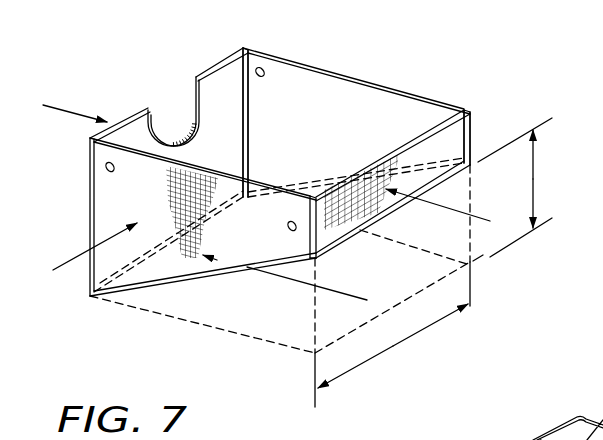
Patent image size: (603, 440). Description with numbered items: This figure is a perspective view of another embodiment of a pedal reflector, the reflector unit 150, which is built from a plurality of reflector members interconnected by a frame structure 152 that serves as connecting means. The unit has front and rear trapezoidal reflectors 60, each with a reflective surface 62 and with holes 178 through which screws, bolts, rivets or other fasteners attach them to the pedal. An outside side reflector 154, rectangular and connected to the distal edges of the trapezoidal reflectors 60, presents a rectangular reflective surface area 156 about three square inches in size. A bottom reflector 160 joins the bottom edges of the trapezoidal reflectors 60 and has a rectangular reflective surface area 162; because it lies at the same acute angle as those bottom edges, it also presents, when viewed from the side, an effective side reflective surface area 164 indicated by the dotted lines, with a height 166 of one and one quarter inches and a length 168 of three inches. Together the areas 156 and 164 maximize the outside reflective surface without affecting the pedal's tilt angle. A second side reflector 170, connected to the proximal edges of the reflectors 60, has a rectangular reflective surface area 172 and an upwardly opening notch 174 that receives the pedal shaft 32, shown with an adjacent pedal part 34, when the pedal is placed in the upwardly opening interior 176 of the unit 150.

The reflector unit 150 is at (438, 75).
The trapezoidal reflector 60 is at (438, 103).
The screen mesh 62 is at (345, 107).
The frame structure 152 is at (293, 263).
The outside side reflector 154 is at (333, 227).
The reflective surface area 156 is at (459, 135).
The bottom reflector 160 is at (258, 240).
The reflective surface area 162 is at (324, 253).
The effective side reflective surface area 164 is at (430, 270).
The height 166 is at (535, 181).
The length 168 is at (392, 334).
The second side reflector 170 is at (193, 96).
The reflective surface area 172 is at (213, 65).
The upwardly opening notch 174 is at (194, 126).
The upwardly opening interior 176 is at (305, 120).
The holes 178 is at (106, 171).
The pedal shaft 32 is at (473, 434).
The frame member 34 is at (503, 437).